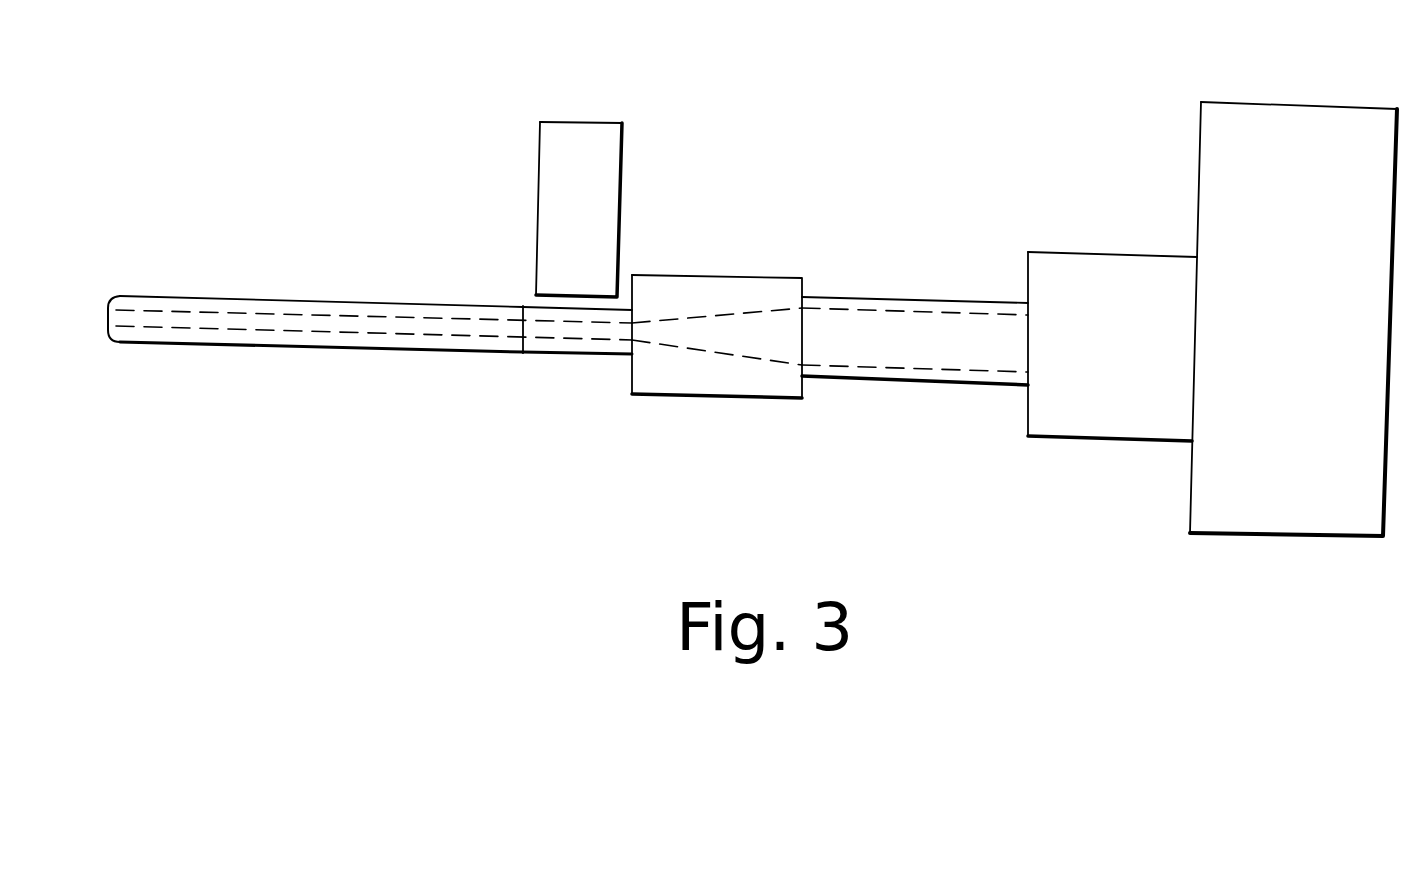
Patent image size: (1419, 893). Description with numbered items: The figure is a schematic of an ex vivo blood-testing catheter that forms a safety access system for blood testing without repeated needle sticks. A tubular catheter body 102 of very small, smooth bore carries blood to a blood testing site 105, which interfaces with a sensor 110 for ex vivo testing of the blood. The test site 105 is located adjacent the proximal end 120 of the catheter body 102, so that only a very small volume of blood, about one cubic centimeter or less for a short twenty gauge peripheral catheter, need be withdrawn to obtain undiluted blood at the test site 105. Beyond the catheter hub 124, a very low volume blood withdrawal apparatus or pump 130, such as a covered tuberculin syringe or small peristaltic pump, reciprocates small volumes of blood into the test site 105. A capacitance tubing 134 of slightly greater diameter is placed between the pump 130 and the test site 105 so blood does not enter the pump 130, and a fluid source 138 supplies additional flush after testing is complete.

The tubular catheter body 102 is at (177, 303).
The blood testing site 105 is at (572, 347).
The sensor 110 is at (609, 160).
The proximal end 120 is at (500, 345).
The hub 124 is at (753, 298).
The pump 130 is at (1094, 276).
The capacitance tubing 134 is at (905, 327).
The fluid source 138 is at (1272, 130).